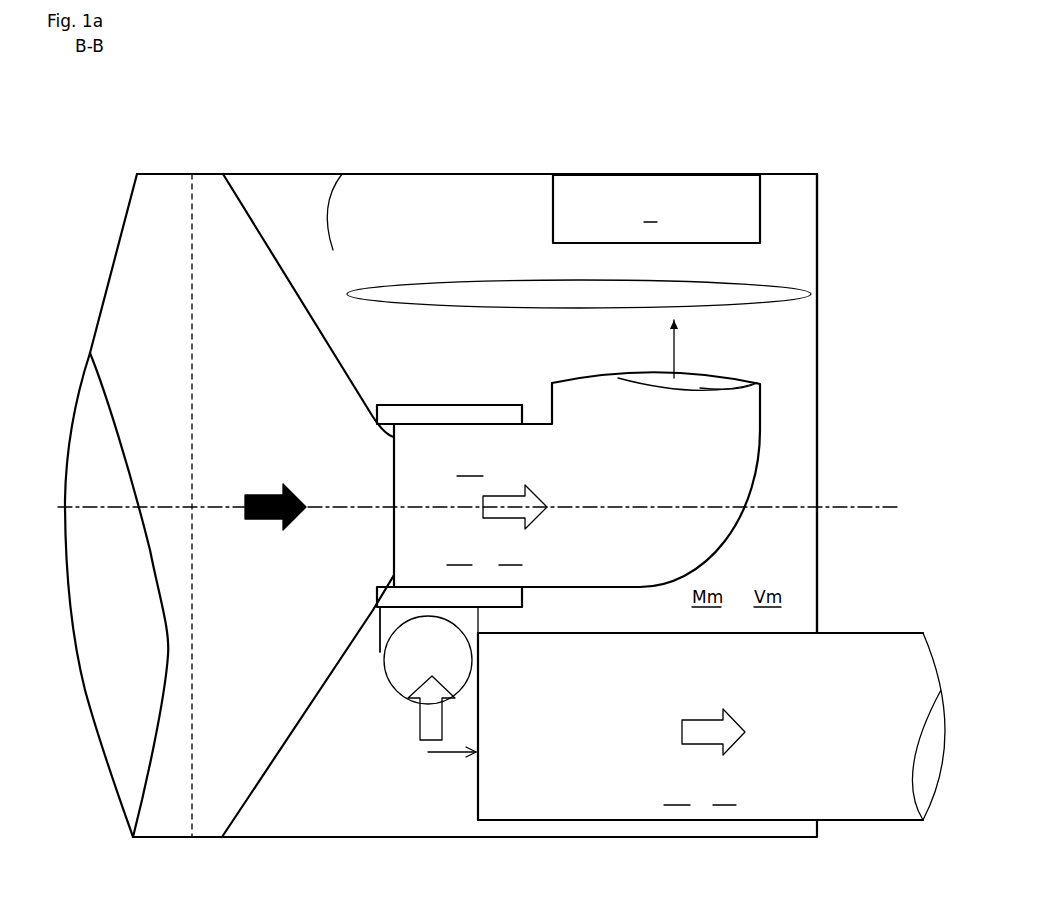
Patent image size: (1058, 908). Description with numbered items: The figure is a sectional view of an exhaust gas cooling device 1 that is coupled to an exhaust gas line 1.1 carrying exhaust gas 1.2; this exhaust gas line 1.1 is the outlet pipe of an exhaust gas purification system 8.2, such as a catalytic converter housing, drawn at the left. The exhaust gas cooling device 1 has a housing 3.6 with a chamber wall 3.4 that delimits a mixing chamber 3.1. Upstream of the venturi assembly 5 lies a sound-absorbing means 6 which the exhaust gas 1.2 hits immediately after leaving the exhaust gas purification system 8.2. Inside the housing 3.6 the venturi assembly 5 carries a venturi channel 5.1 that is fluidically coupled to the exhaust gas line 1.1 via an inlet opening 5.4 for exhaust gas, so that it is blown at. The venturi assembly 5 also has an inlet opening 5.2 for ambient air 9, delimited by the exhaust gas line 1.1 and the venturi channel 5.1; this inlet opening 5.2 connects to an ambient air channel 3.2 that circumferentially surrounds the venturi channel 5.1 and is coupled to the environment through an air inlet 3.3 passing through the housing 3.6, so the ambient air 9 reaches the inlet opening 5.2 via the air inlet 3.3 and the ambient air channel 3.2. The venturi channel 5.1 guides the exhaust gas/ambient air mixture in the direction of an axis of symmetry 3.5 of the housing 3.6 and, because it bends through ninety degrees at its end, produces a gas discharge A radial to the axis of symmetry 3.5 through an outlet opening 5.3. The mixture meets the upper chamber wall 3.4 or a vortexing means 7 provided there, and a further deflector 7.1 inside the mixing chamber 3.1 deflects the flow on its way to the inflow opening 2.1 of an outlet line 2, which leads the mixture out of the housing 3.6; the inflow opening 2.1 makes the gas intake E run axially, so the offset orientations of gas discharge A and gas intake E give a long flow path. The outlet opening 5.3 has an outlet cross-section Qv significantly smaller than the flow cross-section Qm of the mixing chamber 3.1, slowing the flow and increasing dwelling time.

The exhaust gas cooling device 1 is at (808, 123).
The exhaust gas line 1.1 is at (340, 360).
The exhaust gas 1.2 is at (258, 492).
The outlet line 2 is at (862, 806).
The inflow opening 2.1 is at (473, 798).
The mixing chamber 3.1 is at (791, 418).
The ambient air channel 3.2 is at (468, 420).
The air inlet 3.3 is at (385, 683).
The chamber wall 3.4 is at (487, 173).
The axis of symmetry 3.5 is at (835, 507).
The housing 3.6 is at (383, 172).
The venturi assembly 5 is at (426, 402).
The venturi channel 5.1 is at (577, 479).
The inlet opening for ambient air 5.2 is at (388, 437).
The outlet opening 5.3 is at (696, 371).
The inlet opening for exhaust gas 5.4 is at (392, 542).
The sound-absorbing means 6 is at (193, 453).
The vortexing means 7 is at (656, 209).
The deflector 7.1 is at (328, 224).
The exhaust gas purification system 8.2 is at (158, 187).
The ambient air 9 is at (420, 735).
The gas discharge A is at (670, 355).
The gas intake E is at (457, 758).
The flow cross-section Qm is at (776, 291).
The outlet cross-section Qv is at (741, 383).